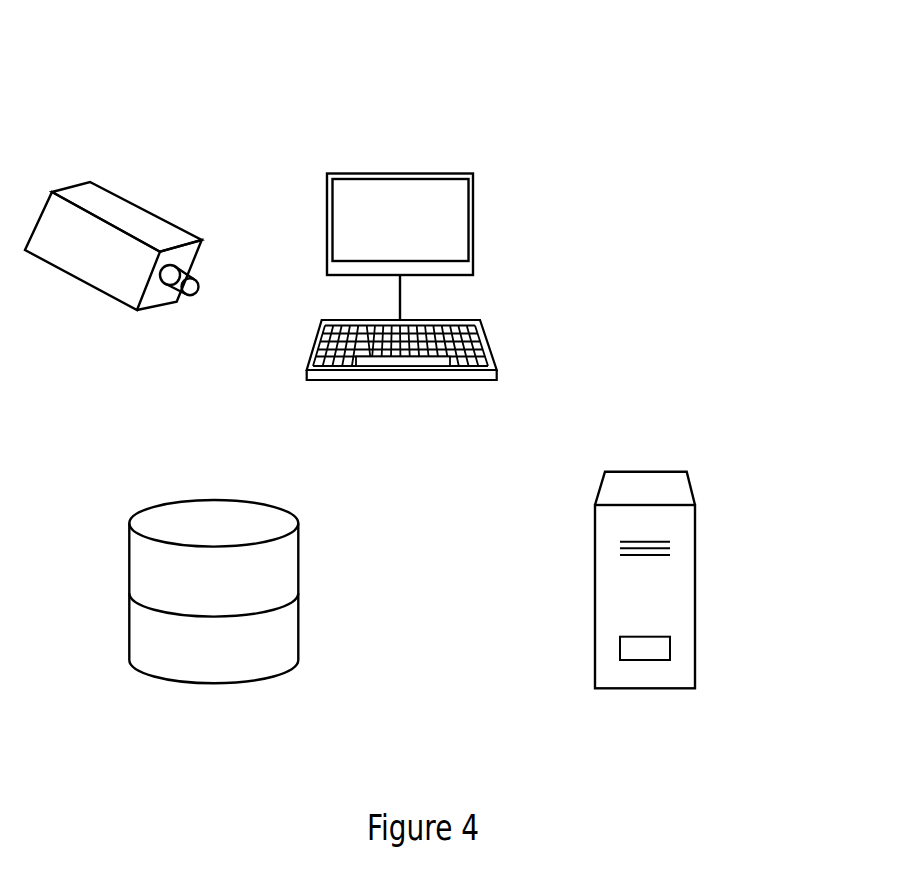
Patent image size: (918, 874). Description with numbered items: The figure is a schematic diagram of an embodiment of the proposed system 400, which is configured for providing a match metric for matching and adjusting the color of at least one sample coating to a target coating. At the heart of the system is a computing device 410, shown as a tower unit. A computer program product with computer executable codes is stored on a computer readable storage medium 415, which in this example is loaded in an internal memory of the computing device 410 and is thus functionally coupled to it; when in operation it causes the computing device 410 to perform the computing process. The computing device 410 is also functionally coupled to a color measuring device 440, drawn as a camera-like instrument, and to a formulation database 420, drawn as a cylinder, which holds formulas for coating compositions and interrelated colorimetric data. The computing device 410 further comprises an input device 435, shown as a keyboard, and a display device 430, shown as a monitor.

The system 400 is at (630, 168).
The computing device 410 is at (673, 572).
The computer readable storage medium 415 is at (663, 652).
The formulation database 420 is at (283, 580).
The display device 430 is at (379, 227).
The input device 435 is at (480, 335).
The color measuring device 440 is at (127, 215).